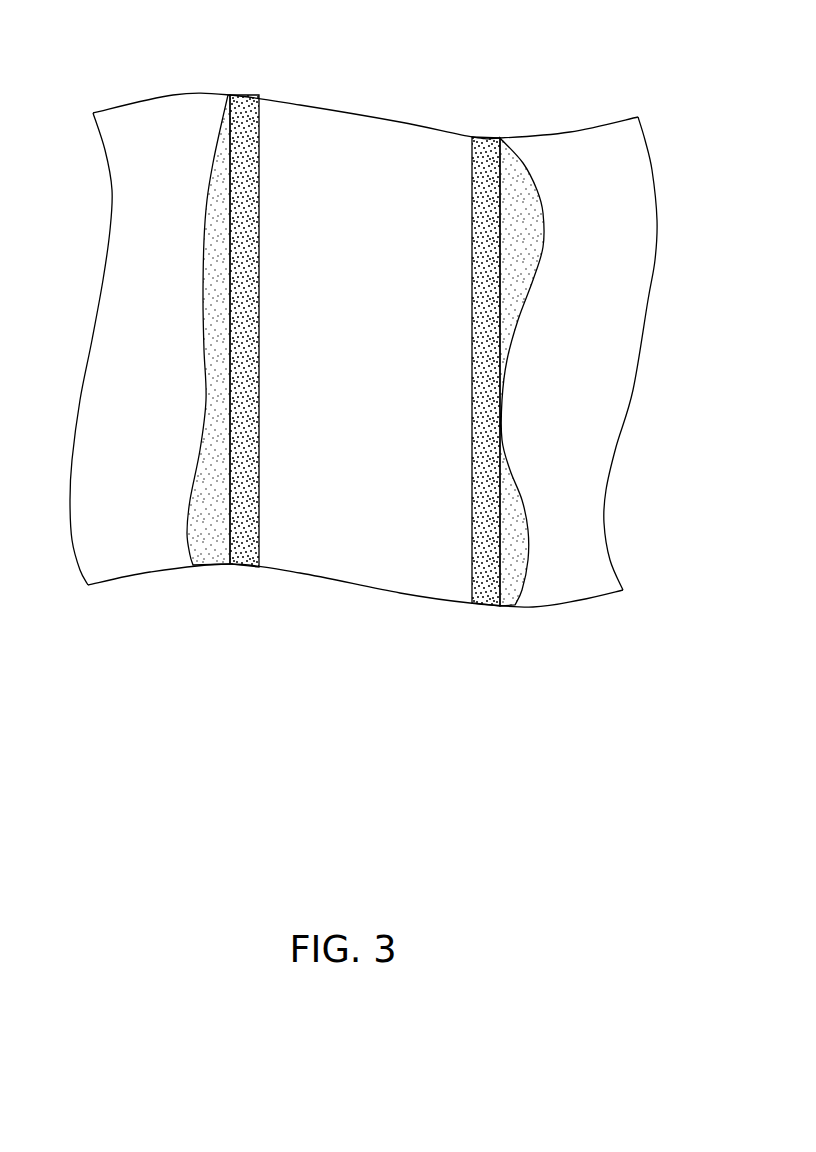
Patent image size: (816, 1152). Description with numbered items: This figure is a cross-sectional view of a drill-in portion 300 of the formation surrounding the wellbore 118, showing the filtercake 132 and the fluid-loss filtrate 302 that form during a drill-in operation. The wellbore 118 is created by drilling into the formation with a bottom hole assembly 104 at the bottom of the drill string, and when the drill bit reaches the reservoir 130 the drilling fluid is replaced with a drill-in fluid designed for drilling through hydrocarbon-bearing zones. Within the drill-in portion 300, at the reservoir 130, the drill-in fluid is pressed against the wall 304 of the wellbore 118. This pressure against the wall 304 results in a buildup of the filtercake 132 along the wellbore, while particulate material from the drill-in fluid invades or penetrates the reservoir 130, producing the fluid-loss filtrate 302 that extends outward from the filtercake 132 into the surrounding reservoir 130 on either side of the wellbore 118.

The drill-in portion 300 is at (358, 357).
The bottom hole assembly 104 is at (320, 68).
The wellbore 118 is at (429, 146).
The reservoir 130 is at (142, 397).
The filtercake 132 is at (248, 558).
The fluid-loss filtrate 302 is at (197, 512).
The wall 304 is at (230, 168).